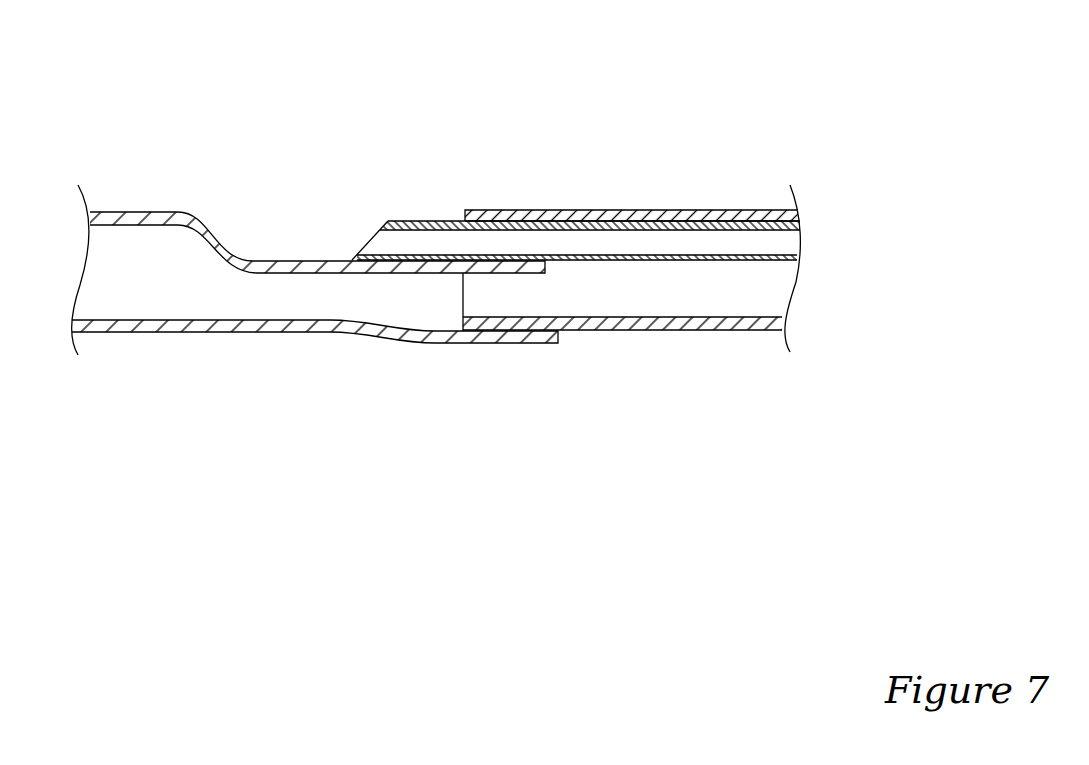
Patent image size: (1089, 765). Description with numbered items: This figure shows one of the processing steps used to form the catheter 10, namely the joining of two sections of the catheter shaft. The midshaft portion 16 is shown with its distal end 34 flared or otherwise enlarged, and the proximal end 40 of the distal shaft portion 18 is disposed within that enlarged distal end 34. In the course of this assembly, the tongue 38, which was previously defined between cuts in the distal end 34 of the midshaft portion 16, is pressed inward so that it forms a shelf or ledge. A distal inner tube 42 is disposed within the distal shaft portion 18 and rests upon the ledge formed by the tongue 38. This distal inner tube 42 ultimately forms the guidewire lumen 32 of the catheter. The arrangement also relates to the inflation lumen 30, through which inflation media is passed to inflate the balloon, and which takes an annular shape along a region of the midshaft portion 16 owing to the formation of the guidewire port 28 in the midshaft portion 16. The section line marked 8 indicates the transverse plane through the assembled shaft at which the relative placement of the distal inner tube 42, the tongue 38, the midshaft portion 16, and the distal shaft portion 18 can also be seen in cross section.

The catheter 10 is at (478, 105).
The midshaft portion 16 is at (125, 327).
The distal shaft portion 18 is at (732, 322).
The guidewire port 28 is at (382, 238).
The inflation lumen 30 is at (625, 293).
The guidewire lumen 32 is at (658, 243).
The distal end 34 is at (482, 337).
The tongue 38 is at (430, 267).
The proximal end 40 is at (593, 215).
The distal inner tube 42 is at (412, 222).
The section line 8- 8 is at (540, 375).